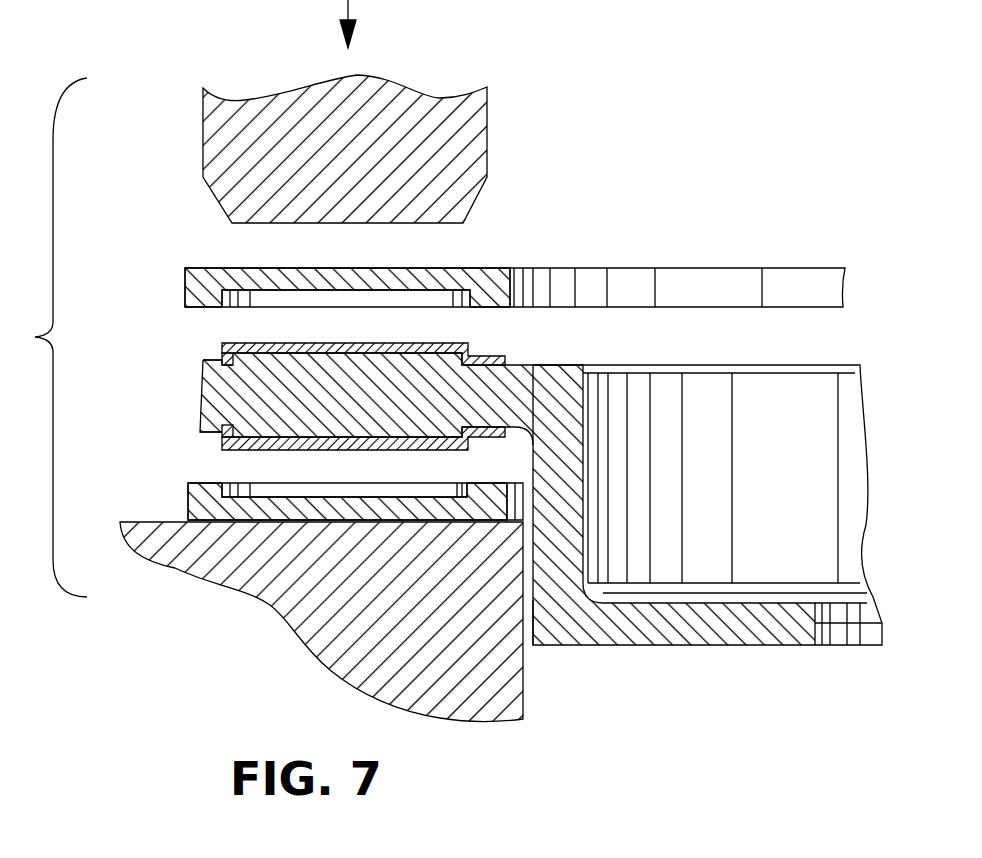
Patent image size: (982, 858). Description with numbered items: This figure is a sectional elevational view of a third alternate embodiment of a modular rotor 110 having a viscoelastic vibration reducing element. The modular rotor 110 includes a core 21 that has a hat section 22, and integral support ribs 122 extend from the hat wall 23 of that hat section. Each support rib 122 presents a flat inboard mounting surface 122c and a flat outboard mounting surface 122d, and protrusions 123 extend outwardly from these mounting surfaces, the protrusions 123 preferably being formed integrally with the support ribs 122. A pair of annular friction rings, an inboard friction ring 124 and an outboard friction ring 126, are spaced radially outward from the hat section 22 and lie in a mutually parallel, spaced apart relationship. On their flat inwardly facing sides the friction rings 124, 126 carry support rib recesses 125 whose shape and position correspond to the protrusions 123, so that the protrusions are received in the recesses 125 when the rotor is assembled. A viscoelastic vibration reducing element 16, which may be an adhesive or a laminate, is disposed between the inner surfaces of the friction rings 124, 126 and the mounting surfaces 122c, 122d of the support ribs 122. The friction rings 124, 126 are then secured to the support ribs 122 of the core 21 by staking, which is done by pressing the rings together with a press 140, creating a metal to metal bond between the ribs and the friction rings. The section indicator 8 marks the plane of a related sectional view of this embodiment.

The press 140 is at (480, 132).
The modular rotor 110 is at (727, 214).
The inboard friction ring 124 is at (480, 268).
The support rib recesses 125 is at (250, 298).
The outboard friction ring 126 is at (187, 514).
The section line for FIG. 8 is at (303, 248).
The support ribs 122 is at (202, 400).
The inboard mounting surface 122c is at (222, 362).
The outboard mounting surface 122d is at (222, 436).
The protrusions 123 is at (222, 355).
The viscoelastic vibration reducing element 16 is at (453, 343).
The hat section 22 is at (583, 648).
The hat wall 23 is at (533, 623).
The core 21 is at (690, 675).